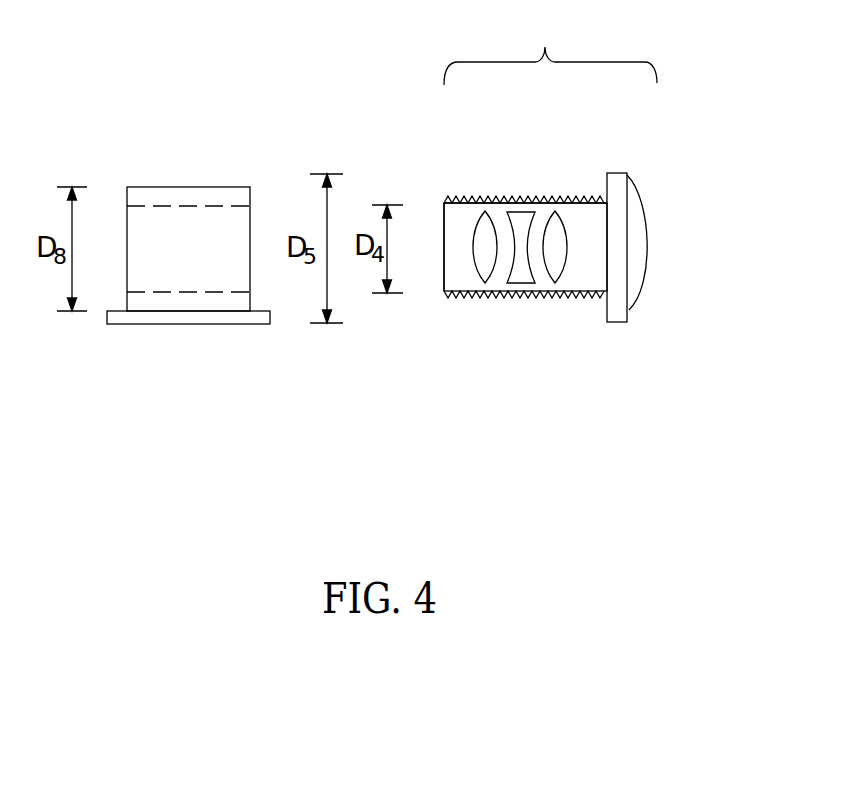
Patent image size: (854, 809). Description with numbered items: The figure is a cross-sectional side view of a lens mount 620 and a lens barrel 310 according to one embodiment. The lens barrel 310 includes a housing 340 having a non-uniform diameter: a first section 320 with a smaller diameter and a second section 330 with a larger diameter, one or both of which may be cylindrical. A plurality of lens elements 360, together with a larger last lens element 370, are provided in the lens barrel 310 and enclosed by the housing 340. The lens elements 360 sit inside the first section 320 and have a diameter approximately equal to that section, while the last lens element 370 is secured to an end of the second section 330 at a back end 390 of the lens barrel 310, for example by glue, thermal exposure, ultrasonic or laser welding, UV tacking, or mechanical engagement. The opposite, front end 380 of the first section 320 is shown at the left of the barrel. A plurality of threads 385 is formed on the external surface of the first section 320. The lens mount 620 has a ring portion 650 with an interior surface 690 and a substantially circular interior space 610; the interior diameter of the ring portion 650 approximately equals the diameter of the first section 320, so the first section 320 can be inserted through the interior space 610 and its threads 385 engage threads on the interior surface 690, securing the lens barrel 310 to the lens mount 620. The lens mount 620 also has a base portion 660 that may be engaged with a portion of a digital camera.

The lens barrel 310 is at (405, 155).
The first section 320 is at (533, 198).
The second section 330 is at (622, 172).
The housing 340 is at (550, 47).
The lens elements 360 is at (567, 278).
The last lens element 370 is at (632, 310).
The barrel rear end 380 is at (431, 289).
The threads 385 is at (476, 185).
The back end 390 is at (635, 172).
The interior space 610 is at (150, 272).
The lens mount 620 is at (124, 160).
The ring portion 650 is at (180, 195).
The base portion 660 is at (241, 318).
The interior surface 690 is at (212, 284).